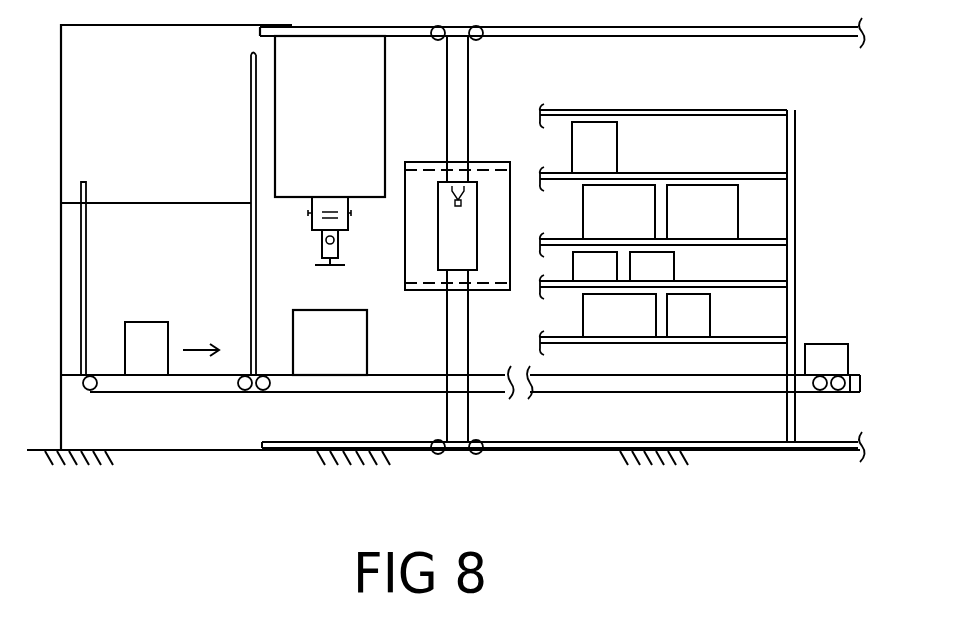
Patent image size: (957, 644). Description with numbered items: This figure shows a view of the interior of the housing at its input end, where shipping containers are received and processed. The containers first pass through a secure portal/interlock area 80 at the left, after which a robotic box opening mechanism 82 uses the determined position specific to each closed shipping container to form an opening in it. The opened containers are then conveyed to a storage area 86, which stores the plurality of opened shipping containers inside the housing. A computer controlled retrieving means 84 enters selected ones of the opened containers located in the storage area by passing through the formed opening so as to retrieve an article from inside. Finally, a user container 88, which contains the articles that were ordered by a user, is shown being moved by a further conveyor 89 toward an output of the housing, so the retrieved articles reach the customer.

The secure portal/interlock area 80 is at (136, 216).
The robotic box opening mechanism 82 is at (356, 167).
The computer controlled retrieving means 84 is at (515, 141).
The storage area 86 is at (688, 102).
The user container 88 is at (866, 328).
The further conveyor 89 is at (852, 375).